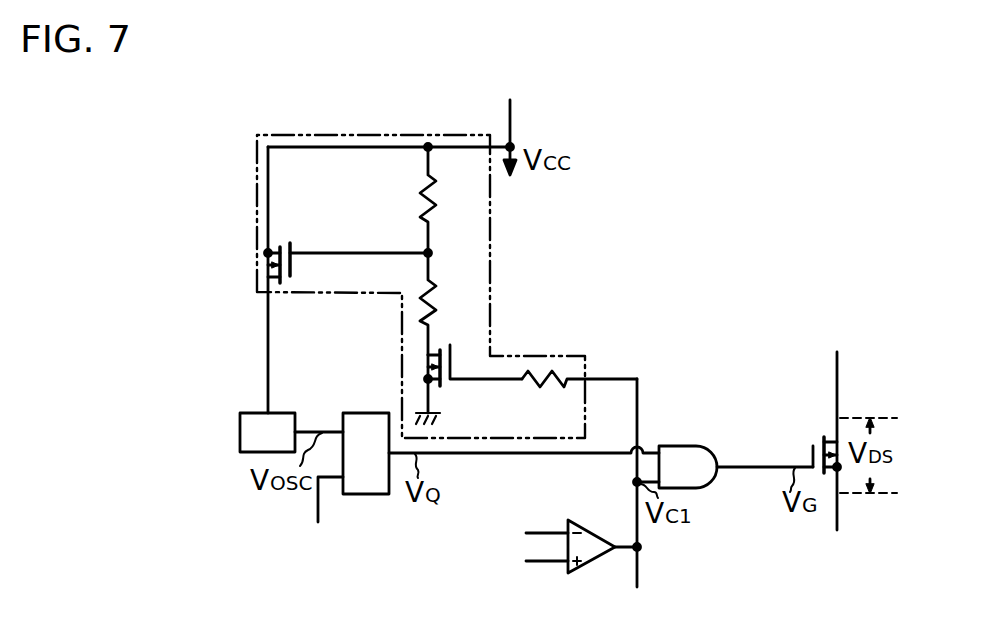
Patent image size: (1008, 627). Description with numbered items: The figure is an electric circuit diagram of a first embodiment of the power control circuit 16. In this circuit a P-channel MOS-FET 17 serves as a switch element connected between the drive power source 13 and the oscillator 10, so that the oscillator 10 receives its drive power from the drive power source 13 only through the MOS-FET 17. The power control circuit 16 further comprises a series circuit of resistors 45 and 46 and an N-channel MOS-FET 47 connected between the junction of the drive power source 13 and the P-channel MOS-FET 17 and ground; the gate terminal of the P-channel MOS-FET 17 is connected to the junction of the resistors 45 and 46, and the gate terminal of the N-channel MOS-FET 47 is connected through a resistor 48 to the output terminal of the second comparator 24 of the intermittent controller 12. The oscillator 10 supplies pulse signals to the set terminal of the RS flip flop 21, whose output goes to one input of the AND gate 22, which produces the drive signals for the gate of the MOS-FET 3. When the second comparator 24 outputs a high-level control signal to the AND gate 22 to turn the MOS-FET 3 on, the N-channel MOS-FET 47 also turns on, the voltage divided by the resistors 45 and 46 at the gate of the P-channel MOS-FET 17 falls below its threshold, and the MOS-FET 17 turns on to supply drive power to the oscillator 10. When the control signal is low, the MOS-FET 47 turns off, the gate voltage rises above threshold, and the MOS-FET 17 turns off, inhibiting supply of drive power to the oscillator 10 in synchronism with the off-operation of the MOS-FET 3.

The MOS-FET 3 is at (818, 441).
The oscillator 10 is at (295, 415).
The intermittent controller 12 is at (672, 566).
The drive power source 13 is at (510, 116).
The power control circuit 16 is at (488, 277).
The P-channel MOS-FET 17 is at (290, 250).
The RS flip flop 21 is at (375, 413).
The AND gate 22 is at (683, 446).
The second comparator 24 is at (576, 522).
The resistor 45 is at (426, 207).
The resistor 46 is at (428, 293).
The N-channel MOS-FET 47 is at (452, 345).
The resistor 48 is at (538, 386).